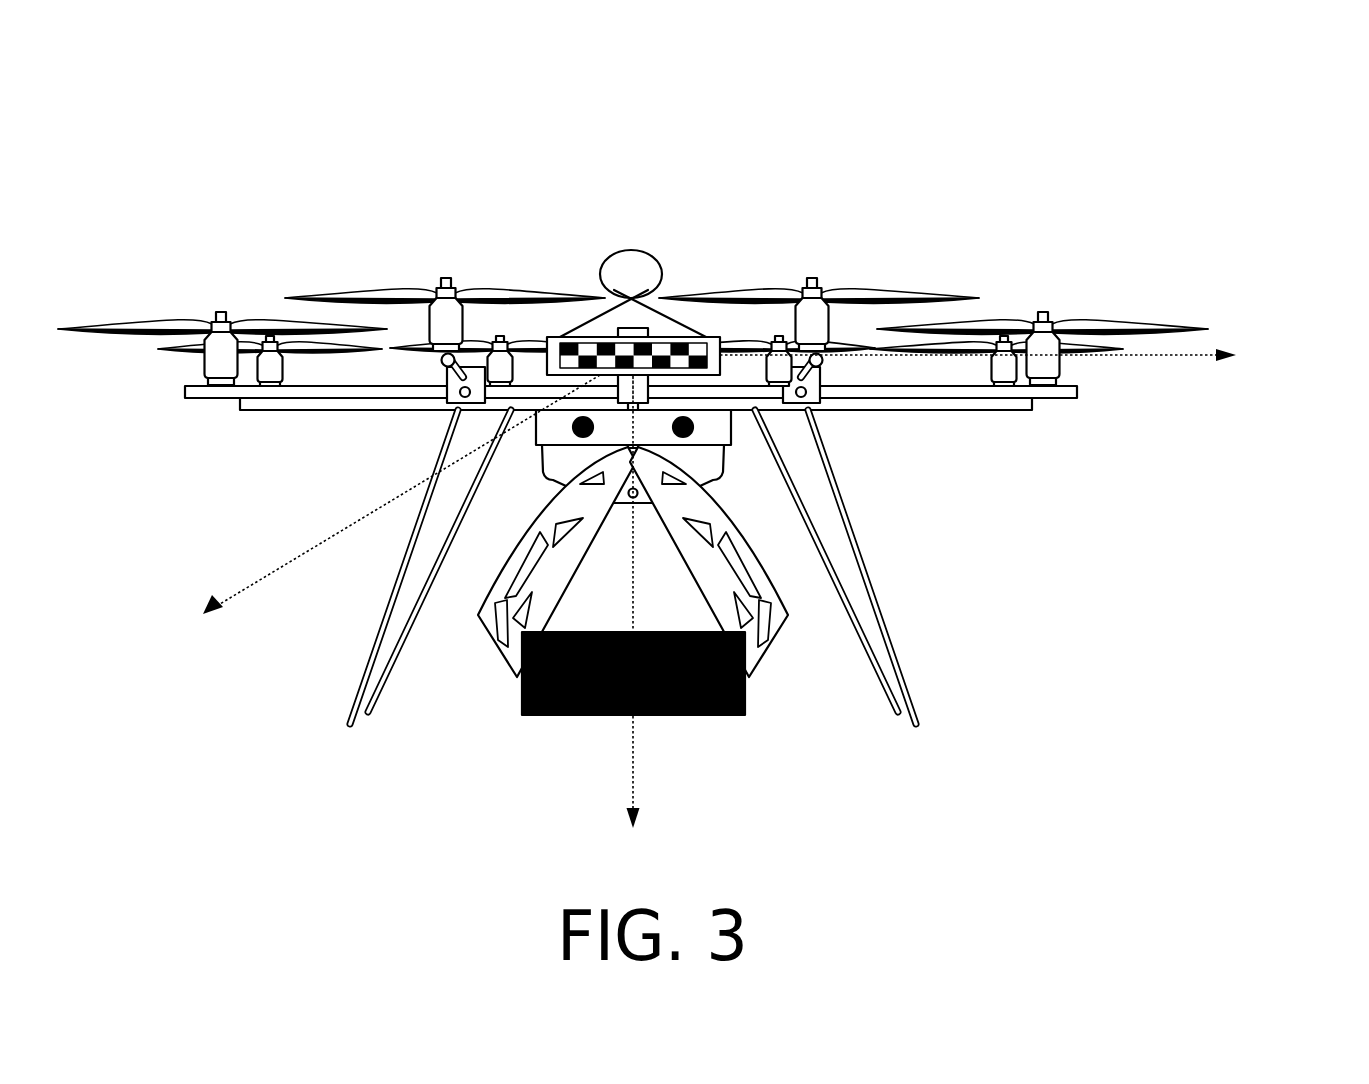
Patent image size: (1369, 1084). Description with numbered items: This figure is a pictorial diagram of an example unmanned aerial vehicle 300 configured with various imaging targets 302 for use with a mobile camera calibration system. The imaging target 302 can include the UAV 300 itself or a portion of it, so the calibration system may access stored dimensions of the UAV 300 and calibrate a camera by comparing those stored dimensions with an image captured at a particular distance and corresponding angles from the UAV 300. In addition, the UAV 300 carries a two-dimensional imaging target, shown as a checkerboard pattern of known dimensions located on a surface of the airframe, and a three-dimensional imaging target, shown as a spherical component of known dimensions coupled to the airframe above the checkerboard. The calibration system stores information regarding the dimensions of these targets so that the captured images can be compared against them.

The unmanned aerial vehicle 300 is at (700, 464).
The imaging targets 302 is at (549, 334).